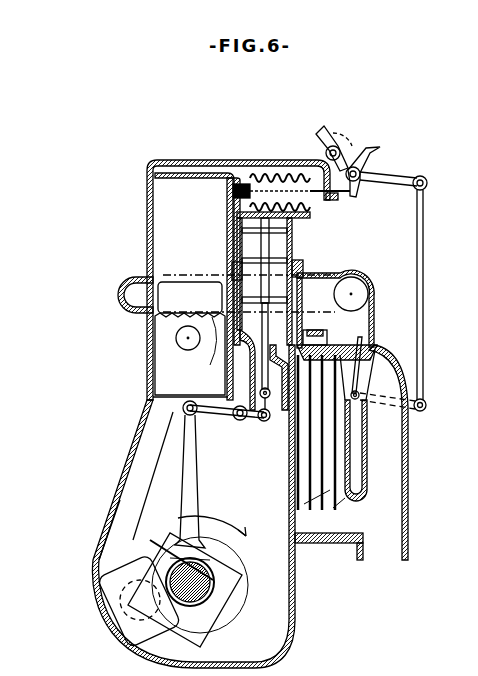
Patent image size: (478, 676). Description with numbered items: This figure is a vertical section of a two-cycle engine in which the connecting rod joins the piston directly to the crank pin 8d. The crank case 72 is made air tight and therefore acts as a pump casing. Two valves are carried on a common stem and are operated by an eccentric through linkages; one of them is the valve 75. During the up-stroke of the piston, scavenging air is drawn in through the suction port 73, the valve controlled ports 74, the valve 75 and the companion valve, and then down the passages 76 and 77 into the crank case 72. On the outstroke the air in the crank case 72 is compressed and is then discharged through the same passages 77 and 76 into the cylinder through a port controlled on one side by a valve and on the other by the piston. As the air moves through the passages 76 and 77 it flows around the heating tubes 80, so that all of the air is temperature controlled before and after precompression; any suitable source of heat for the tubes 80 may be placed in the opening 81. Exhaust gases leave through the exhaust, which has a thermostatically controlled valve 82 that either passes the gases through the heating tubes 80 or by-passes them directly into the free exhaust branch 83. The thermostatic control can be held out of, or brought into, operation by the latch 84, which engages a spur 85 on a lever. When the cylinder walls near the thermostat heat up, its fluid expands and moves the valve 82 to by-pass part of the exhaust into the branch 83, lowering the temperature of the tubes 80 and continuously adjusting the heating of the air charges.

The crank pin 8d is at (130, 612).
The crank case 72 is at (91, 543).
The suction port 73 is at (304, 250).
The valve controlled ports 74 is at (229, 244).
The valve 75 is at (300, 233).
The passage 76 is at (278, 415).
The passage 77 is at (288, 515).
The heating tubes 80 is at (330, 508).
The opening 81 is at (333, 341).
The thermostatically controlled valve 82 is at (373, 360).
The free exhaust branch 83 is at (367, 450).
The latch 84 is at (319, 138).
The spur 85 is at (366, 154).